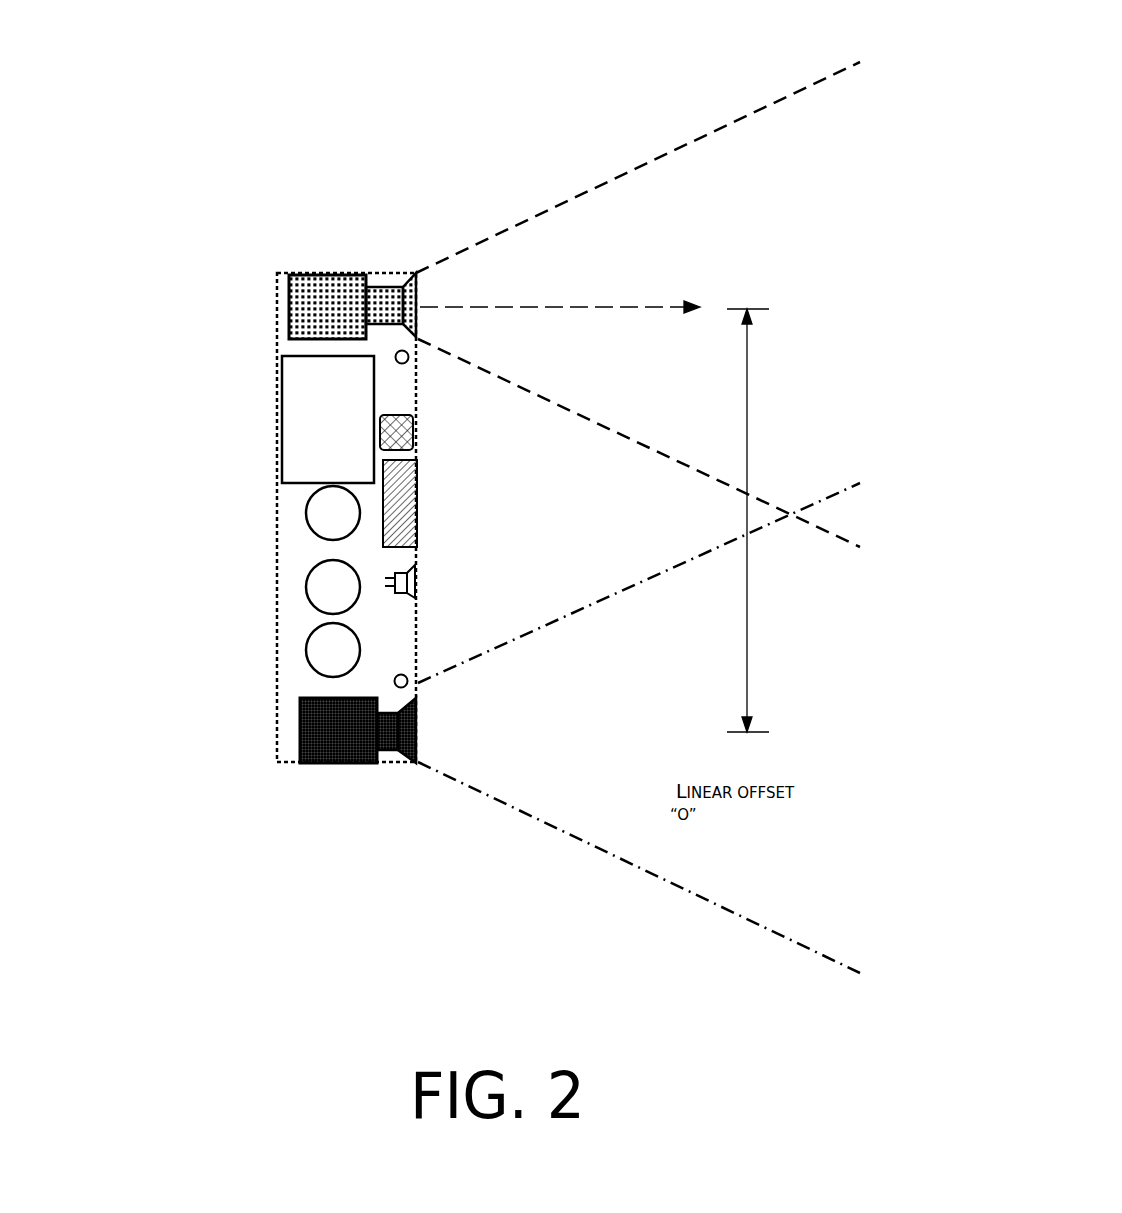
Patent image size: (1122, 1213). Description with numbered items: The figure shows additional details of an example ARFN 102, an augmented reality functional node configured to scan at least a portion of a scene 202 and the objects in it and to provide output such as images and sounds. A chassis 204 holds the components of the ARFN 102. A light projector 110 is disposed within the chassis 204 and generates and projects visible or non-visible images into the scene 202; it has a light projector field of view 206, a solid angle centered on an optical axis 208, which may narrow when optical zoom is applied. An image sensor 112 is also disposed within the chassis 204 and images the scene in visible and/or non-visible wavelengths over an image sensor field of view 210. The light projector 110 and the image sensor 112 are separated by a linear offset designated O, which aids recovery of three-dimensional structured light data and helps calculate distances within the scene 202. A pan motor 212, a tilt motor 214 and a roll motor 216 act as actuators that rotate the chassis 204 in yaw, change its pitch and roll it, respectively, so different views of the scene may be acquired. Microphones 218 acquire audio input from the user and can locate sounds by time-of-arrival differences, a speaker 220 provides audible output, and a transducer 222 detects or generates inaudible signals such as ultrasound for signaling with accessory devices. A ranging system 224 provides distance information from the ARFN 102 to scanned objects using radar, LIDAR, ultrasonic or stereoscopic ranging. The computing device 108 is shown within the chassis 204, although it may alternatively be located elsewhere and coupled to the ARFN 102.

The ARFN 102 is at (310, 272).
The chassis 204 is at (345, 272).
The light projector field of view 206 is at (643, 165).
The light projector 110 is at (325, 307).
The microphones 218 is at (408, 354).
The optical axis 208 is at (648, 307).
The transducer 222 is at (413, 418).
The computing device 108 is at (328, 422).
The ranging system 224 is at (403, 497).
The speaker 220 is at (413, 580).
The pan motor 212 is at (307, 515).
The tilt motor 214 is at (307, 590).
The roll motor 216 is at (307, 652).
The image sensor 112 is at (338, 735).
The image sensor field of view 210 is at (590, 847).
The scene 202 is at (896, 516).